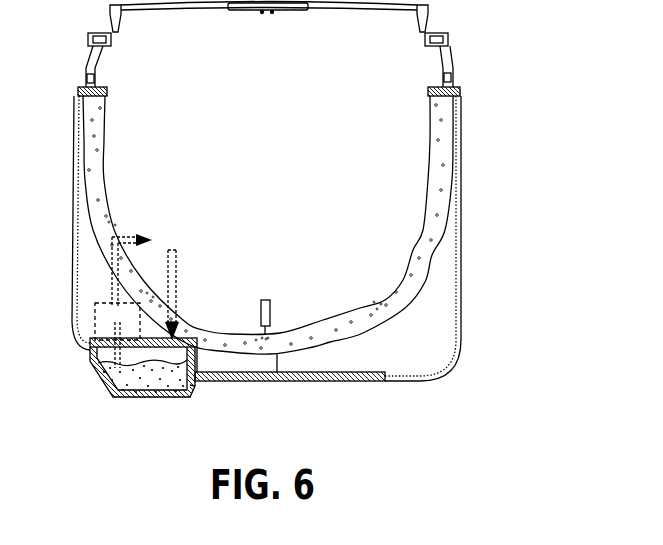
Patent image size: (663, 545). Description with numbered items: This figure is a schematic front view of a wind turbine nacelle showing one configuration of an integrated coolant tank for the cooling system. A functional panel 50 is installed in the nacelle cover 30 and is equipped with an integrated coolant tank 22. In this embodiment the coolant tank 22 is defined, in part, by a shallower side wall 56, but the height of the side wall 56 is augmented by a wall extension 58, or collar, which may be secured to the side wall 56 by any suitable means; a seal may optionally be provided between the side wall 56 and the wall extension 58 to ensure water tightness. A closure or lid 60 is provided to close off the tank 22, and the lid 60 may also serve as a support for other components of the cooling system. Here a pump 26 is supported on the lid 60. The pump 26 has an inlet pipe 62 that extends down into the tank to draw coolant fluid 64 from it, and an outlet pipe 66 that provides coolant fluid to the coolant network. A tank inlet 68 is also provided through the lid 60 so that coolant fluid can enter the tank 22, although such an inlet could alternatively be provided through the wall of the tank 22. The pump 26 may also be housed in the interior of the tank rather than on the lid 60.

The coolant tank 22 is at (136, 391).
The pump 26 is at (95, 318).
The nacelle cover 30 is at (67, 109).
The functional panel 50 is at (338, 381).
The side wall 56 is at (192, 390).
The wall extension 58 is at (92, 361).
The lid 60 is at (178, 322).
The inlet pipe 62 is at (88, 343).
The coolant fluid 64 is at (163, 380).
The outlet pipe 66 is at (116, 237).
The tank inlet 68 is at (177, 265).